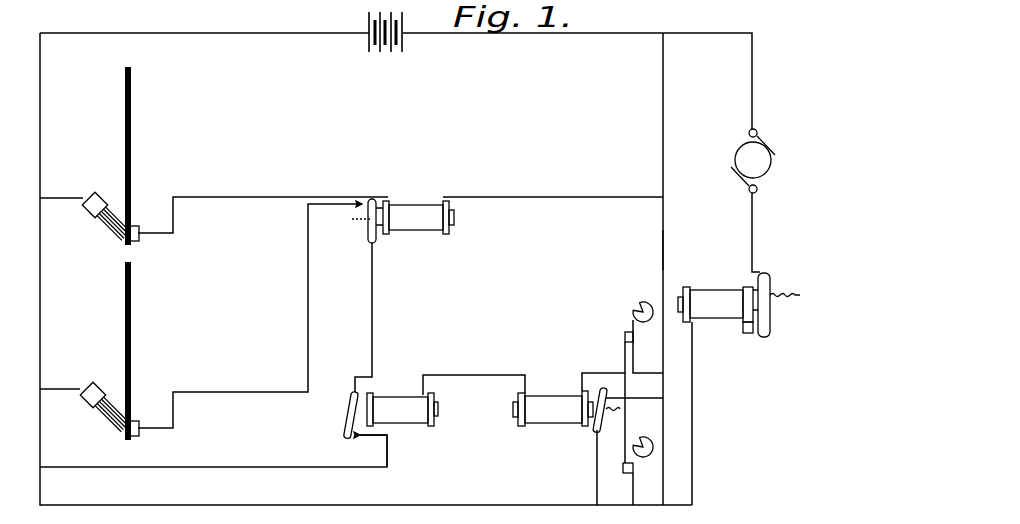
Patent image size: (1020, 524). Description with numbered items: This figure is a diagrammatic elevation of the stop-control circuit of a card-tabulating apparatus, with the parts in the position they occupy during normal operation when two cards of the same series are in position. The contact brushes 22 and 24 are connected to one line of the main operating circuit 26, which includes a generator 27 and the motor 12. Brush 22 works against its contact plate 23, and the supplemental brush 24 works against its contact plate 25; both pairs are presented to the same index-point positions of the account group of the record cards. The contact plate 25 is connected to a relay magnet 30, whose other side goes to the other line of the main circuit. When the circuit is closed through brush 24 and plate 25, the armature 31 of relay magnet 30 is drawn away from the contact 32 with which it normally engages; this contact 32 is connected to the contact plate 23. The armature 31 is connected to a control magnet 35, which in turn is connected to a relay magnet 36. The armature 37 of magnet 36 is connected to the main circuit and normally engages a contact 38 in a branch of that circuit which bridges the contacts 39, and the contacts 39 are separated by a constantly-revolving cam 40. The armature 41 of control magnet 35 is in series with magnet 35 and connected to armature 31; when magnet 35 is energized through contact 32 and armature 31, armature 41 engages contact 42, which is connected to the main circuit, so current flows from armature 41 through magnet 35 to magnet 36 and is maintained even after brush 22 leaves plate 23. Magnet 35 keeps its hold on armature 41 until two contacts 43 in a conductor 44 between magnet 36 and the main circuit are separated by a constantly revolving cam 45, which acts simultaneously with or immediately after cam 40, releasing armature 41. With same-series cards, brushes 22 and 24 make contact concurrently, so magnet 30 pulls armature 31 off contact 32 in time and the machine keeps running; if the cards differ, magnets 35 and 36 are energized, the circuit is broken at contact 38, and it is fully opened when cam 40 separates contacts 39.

The motor 12 is at (762, 173).
The contact brush 22 is at (108, 413).
The contact plate 23 is at (138, 426).
The brush 24 is at (107, 221).
The contact plate 25 is at (136, 240).
The main operating circuit 26 is at (46, 170).
The generator 27 is at (385, 46).
The relay magnet 30 is at (418, 232).
The armature 31 is at (367, 230).
The contact 32 is at (364, 203).
The control magnet 35 is at (410, 422).
The relay magnet 36 is at (540, 423).
The armature 37 is at (612, 410).
The contact 38 is at (609, 397).
The contacts 39 is at (641, 476).
The constantly-revolving cam 40 is at (628, 432).
The armature 41 is at (351, 413).
The contact 42 is at (360, 438).
The contacts 43 is at (625, 343).
The conductor 44 is at (662, 238).
The constantly revolving cam 45 is at (650, 308).